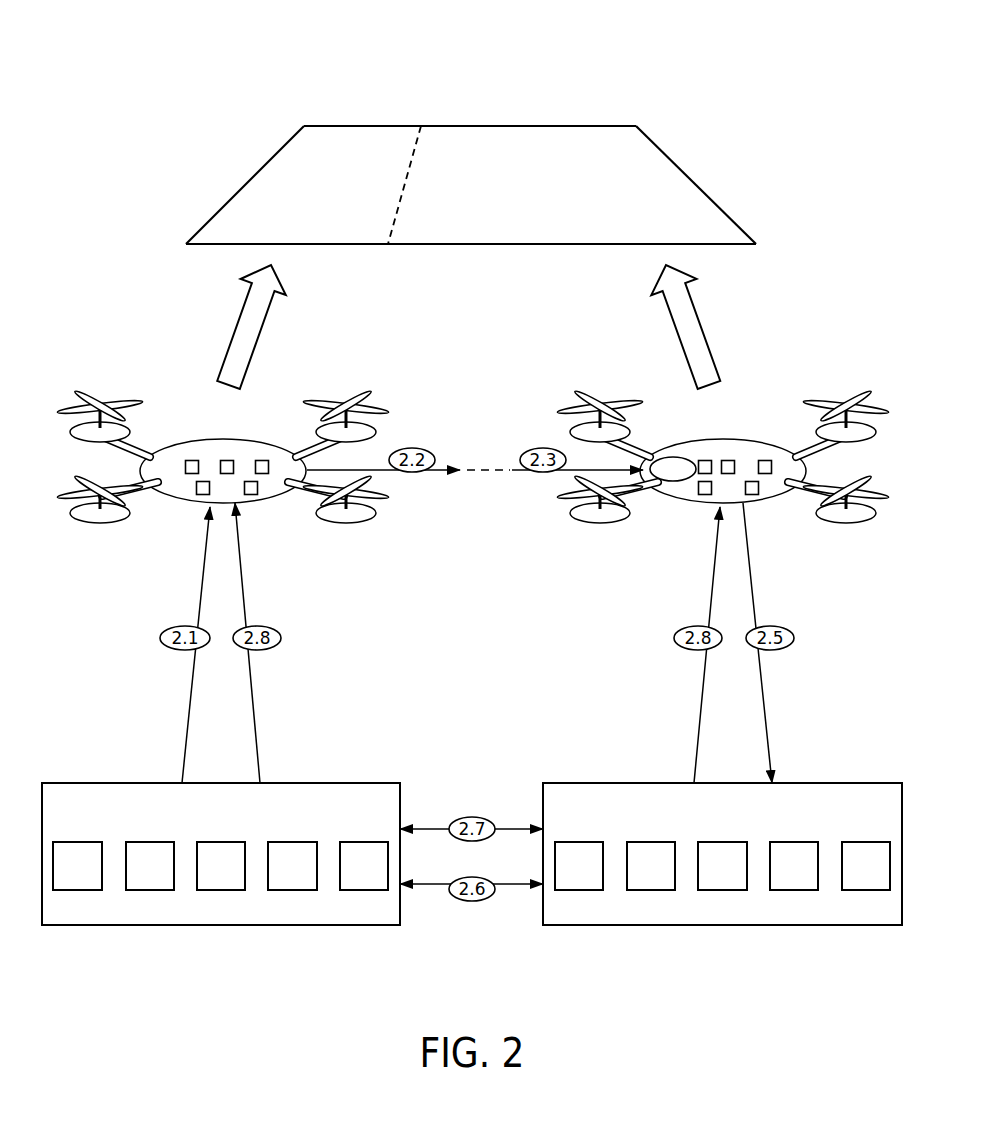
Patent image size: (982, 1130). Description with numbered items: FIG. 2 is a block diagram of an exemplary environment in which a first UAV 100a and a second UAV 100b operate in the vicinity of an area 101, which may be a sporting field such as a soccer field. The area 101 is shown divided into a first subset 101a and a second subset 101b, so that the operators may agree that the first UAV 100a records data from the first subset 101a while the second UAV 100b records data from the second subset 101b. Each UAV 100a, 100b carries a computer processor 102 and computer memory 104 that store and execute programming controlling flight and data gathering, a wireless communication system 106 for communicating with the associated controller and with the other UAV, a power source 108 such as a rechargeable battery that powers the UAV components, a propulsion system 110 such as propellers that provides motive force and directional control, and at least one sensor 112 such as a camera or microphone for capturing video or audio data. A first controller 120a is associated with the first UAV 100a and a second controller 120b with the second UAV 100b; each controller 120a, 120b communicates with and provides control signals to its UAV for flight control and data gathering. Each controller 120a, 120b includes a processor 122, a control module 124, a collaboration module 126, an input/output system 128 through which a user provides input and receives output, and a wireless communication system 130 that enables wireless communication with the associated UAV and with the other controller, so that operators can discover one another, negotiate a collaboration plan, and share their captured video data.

The area 101 is at (475, 125).
The first subset of the area 101a is at (254, 189).
The second subset of the area 101b is at (691, 189).
The first UAV 100a is at (108, 380).
The second UAV 100b is at (608, 378).
The computer processor 102 is at (188, 460).
The computer memory 104 is at (226, 460).
The wireless communication system 106 is at (260, 460).
The power source 108 is at (200, 497).
The sensor 112 is at (258, 497).
The propulsion system 110 is at (70, 524).
The first controller 120a is at (303, 815).
The second controller 120b is at (805, 815).
The processor 122 is at (61, 878).
The control module 124 is at (134, 878).
The collaboration module 126 is at (204, 878).
The input/output (I/O) system 128 is at (276, 878).
The wireless communication system 130 is at (348, 878).